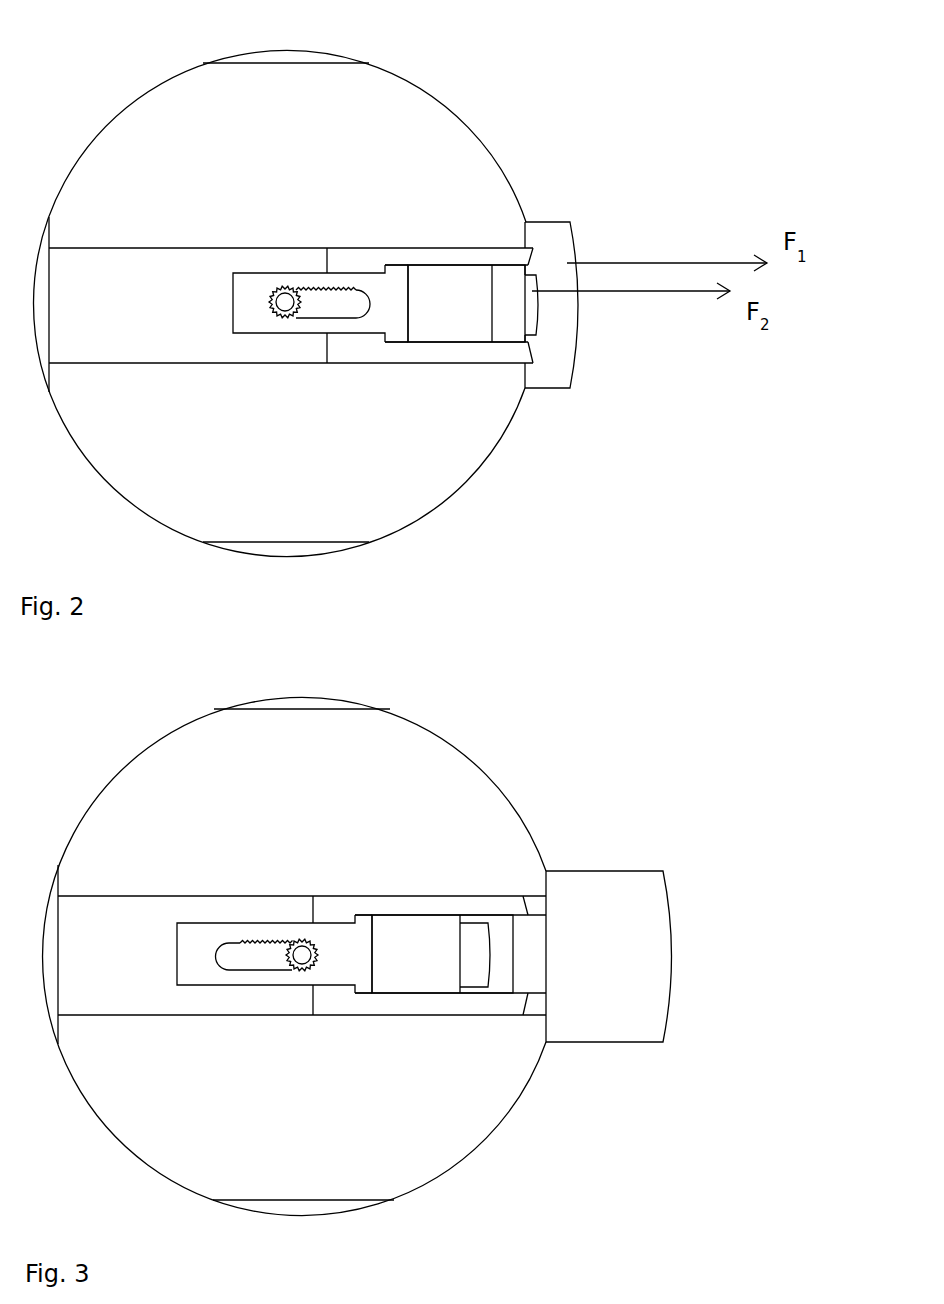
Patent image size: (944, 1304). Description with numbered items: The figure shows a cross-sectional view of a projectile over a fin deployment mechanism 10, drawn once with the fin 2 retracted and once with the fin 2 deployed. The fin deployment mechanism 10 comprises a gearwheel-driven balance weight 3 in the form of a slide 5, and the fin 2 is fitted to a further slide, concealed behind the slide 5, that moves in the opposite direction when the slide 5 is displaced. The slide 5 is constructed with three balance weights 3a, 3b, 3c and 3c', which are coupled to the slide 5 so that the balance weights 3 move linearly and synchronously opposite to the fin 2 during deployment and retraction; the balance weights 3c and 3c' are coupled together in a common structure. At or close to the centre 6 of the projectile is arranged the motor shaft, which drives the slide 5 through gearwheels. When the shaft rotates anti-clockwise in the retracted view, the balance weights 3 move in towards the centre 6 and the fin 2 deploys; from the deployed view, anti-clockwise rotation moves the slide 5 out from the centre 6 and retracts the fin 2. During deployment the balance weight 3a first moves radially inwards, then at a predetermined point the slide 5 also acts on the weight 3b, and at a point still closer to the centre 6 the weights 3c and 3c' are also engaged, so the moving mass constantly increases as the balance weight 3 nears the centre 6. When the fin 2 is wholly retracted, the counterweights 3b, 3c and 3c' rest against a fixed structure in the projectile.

In FIG. 2, the fin deployment mechanism 10 is at (91, 62).
In FIG. 3, the fin deployment mechanism 10 is at (80, 709).
In FIG. 2, the fin 2 is at (559, 236).
In FIG. 3, the fin 2 is at (616, 905).
In FIG. 2, the balance weight 3 is at (598, 76).
In FIG. 2, the balance weight 3a is at (532, 302).
In FIG. 3, the balance weight 3a is at (472, 968).
In FIG. 2, the balance weight 3b is at (448, 325).
In FIG. 3, the balance weight 3b is at (408, 978).
In FIG. 2, the balance weight 3c is at (476, 426).
In FIG. 3, the balance weight 3c is at (437, 1091).
In FIG. 2, the balance weight 3c' is at (476, 185).
In FIG. 3, the balance weight 3c' is at (451, 812).
In FIG. 2, the slide 5 is at (253, 292).
In FIG. 3, the slide 5 is at (203, 939).
In FIG. 2, the centre of the projectile 6 is at (285, 302).
In FIG. 3, the centre of the projectile 6 is at (302, 955).